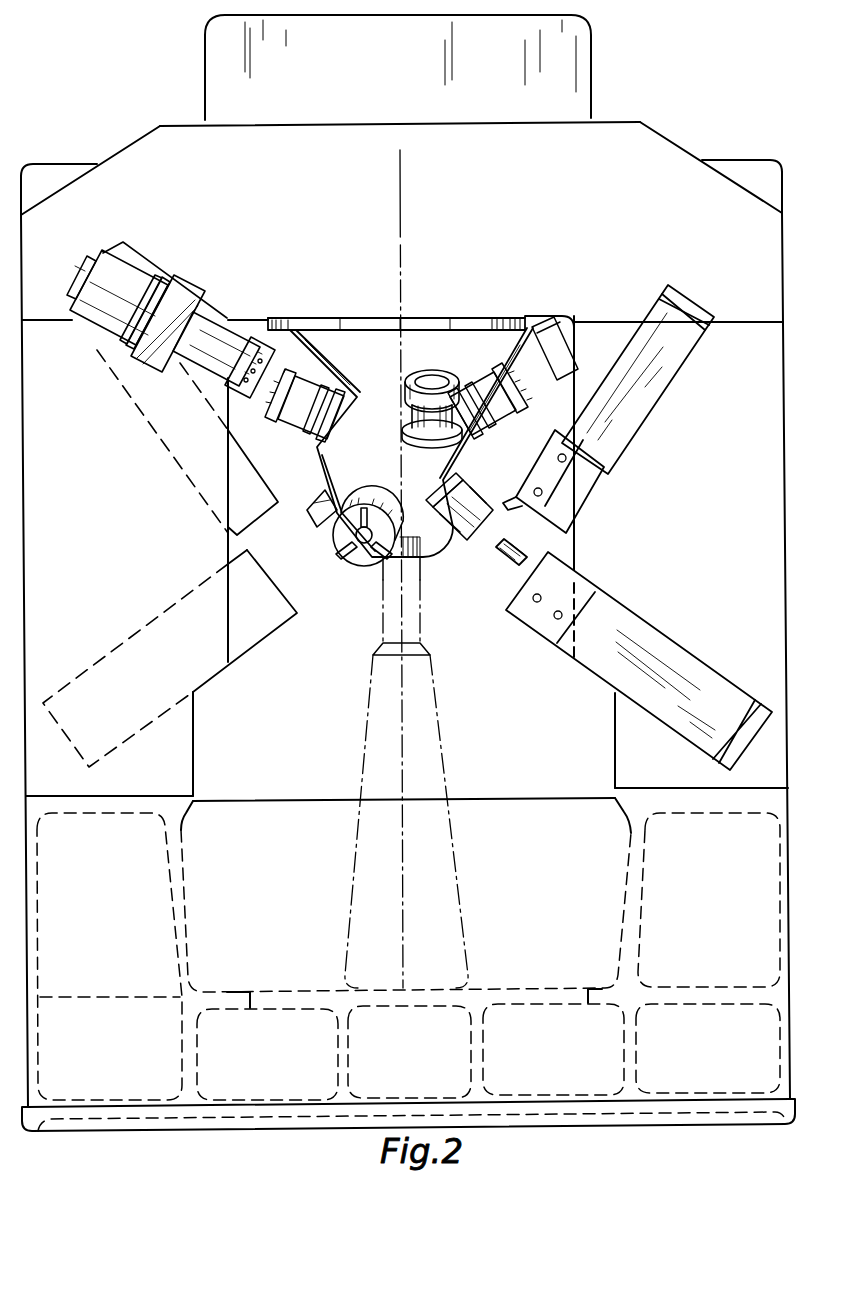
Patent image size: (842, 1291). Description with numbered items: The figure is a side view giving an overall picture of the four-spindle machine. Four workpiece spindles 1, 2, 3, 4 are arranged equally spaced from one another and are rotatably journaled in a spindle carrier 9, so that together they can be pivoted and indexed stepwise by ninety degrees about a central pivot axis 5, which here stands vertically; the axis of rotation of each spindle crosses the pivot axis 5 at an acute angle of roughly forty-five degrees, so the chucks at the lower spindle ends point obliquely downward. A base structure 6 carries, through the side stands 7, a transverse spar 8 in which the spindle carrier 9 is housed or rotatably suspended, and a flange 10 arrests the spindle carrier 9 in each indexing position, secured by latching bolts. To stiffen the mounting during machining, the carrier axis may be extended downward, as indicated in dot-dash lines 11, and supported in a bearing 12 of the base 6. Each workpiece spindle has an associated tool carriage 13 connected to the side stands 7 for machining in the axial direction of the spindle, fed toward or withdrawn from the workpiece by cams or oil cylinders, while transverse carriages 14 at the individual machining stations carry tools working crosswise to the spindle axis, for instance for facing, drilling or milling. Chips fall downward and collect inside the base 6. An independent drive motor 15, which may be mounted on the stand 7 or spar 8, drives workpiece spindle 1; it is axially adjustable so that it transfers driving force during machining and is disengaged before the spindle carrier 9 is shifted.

The workpiece spindle 1 is at (480, 487).
The workpiece spindle 2 is at (363, 545).
The workpiece spindle 3 is at (317, 488).
The workpiece spindle 4 is at (443, 372).
The pivot axis 5 is at (403, 277).
The base structure 6 is at (548, 914).
The side stand 7 is at (84, 507).
The transverse spar 8 is at (667, 158).
The spindle carrier 9 is at (372, 370).
The flange 10 is at (291, 327).
The extended spindle carrier axis 11 is at (415, 622).
The bearing 12 is at (437, 733).
The tool carriage 13 is at (662, 648).
The transverse carriage 14 is at (660, 383).
The drive motor 15 is at (207, 300).